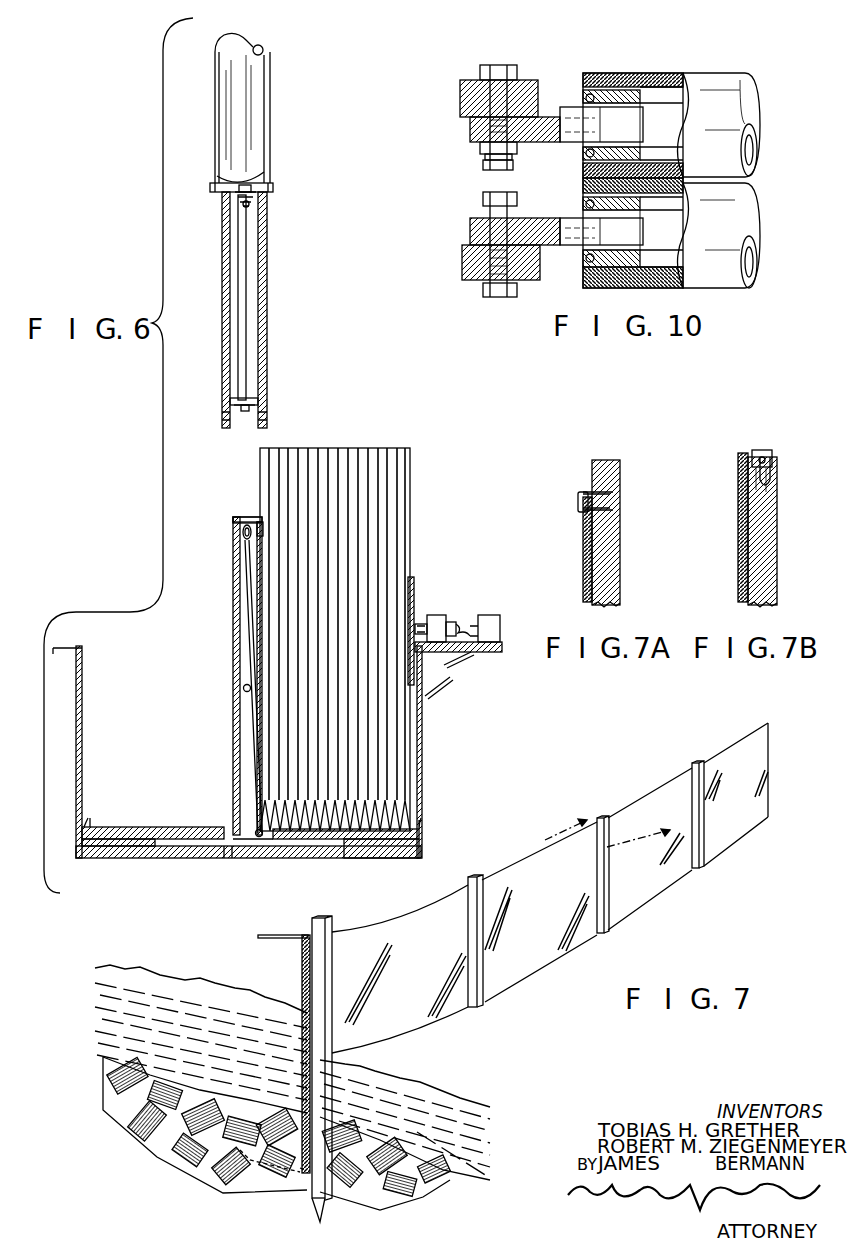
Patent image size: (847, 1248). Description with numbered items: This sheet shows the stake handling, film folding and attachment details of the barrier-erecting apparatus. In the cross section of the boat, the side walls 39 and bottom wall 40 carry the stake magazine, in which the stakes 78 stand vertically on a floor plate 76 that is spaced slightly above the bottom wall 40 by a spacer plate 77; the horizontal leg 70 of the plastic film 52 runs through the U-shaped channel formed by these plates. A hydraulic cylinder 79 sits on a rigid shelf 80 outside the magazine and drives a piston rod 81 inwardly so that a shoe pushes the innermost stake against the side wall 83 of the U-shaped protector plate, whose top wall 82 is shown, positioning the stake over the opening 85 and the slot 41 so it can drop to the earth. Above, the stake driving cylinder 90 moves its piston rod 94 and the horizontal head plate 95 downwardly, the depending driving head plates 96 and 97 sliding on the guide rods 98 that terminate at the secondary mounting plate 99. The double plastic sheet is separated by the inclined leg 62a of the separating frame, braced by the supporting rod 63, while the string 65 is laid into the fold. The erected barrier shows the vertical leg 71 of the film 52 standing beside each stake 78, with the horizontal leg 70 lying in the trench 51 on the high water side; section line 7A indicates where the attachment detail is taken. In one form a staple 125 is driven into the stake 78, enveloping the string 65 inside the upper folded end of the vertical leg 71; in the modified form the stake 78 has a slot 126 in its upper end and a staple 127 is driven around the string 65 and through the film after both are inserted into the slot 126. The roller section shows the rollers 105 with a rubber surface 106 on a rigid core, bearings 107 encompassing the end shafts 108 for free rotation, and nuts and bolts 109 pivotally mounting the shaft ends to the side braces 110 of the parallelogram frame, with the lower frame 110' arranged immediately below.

In FIG. 6, the hydraulic cylinder 90 is at (248, 68).
In FIG. 6, the piston rod 94 is at (243, 186).
In FIG. 6, the horizontal head plate 95 is at (255, 196).
In FIG. 6, the driving head plate 96 is at (262, 300).
In FIG. 6, the driving head plate 97 is at (226, 296).
In FIG. 6, the guide rods 98 is at (240, 238).
In FIG. 6, the secondary mounting plate 99 is at (250, 400).
In FIG. 6, the stakes 78 is at (390, 448).
In FIG. 7A, the stakes 78 is at (612, 478).
In FIG. 7B, the stakes 78 is at (768, 478).
In FIG. 7, the stakes 78 is at (478, 882).
In FIG. 6, the side walls of protector plate 83 is at (258, 522).
In FIG. 6, the top wall of protector plate 82 is at (244, 520).
In FIG. 6, the horizontal leg of separating frame 62a is at (242, 558).
In FIG. 6, the supporting rod 63 is at (244, 686).
In FIG. 6, the side walls 39 is at (84, 732).
In FIG. 6, the plastic film barrier 52 is at (248, 762).
In FIG. 7, the plastic film barrier 52 is at (440, 918).
In FIG. 6, the floor plate 76 is at (92, 820).
In FIG. 6, the spacer plate 77 is at (443, 842).
In FIG. 6, the horizontal leg of film 70 is at (248, 864).
In FIG. 7, the horizontal leg of film 70 is at (240, 1188).
In FIG. 6, the slot 41 is at (228, 858).
In FIG. 6, the opening 85 is at (259, 838).
In FIG. 6, the bottom wall 40 is at (344, 858).
In FIG. 6, the piston rod 81 is at (424, 624).
In FIG. 6, the hydraulic cylinder 79 is at (452, 618).
In FIG. 6, the rigid shelf 80 is at (490, 652).
In FIG. 7, the section line 7a—7a 7A is at (597, 848).
In FIG. 10, the rollers 105 is at (676, 72).
In FIG. 10, the rubber surface 106 is at (628, 73).
In FIG. 10, the bearings 107 is at (590, 92).
In FIG. 10, the end shafts 108 is at (578, 108).
In FIG. 10, the nuts and bolts 109 is at (500, 65).
In FIG. 10, the side braces 110 is at (488, 99).
In FIG. 10, the lower frame 110' is at (511, 258).
In FIG. 7A, the string 65 is at (585, 492).
In FIG. 7B, the string 65 is at (770, 458).
In FIG. 7, the string 65 is at (300, 934).
In FIG. 7A, the vertical leg of film 71 is at (583, 540).
In FIG. 7B, the vertical leg of film 71 is at (738, 500).
In FIG. 7, the vertical leg of film 71 is at (302, 985).
In FIG. 7A, the staple 125 is at (580, 494).
In FIG. 7B, the slot 126 is at (770, 480).
In FIG. 7B, the staple 127 is at (760, 450).
In FIG. 7, the trench 51 is at (365, 1158).